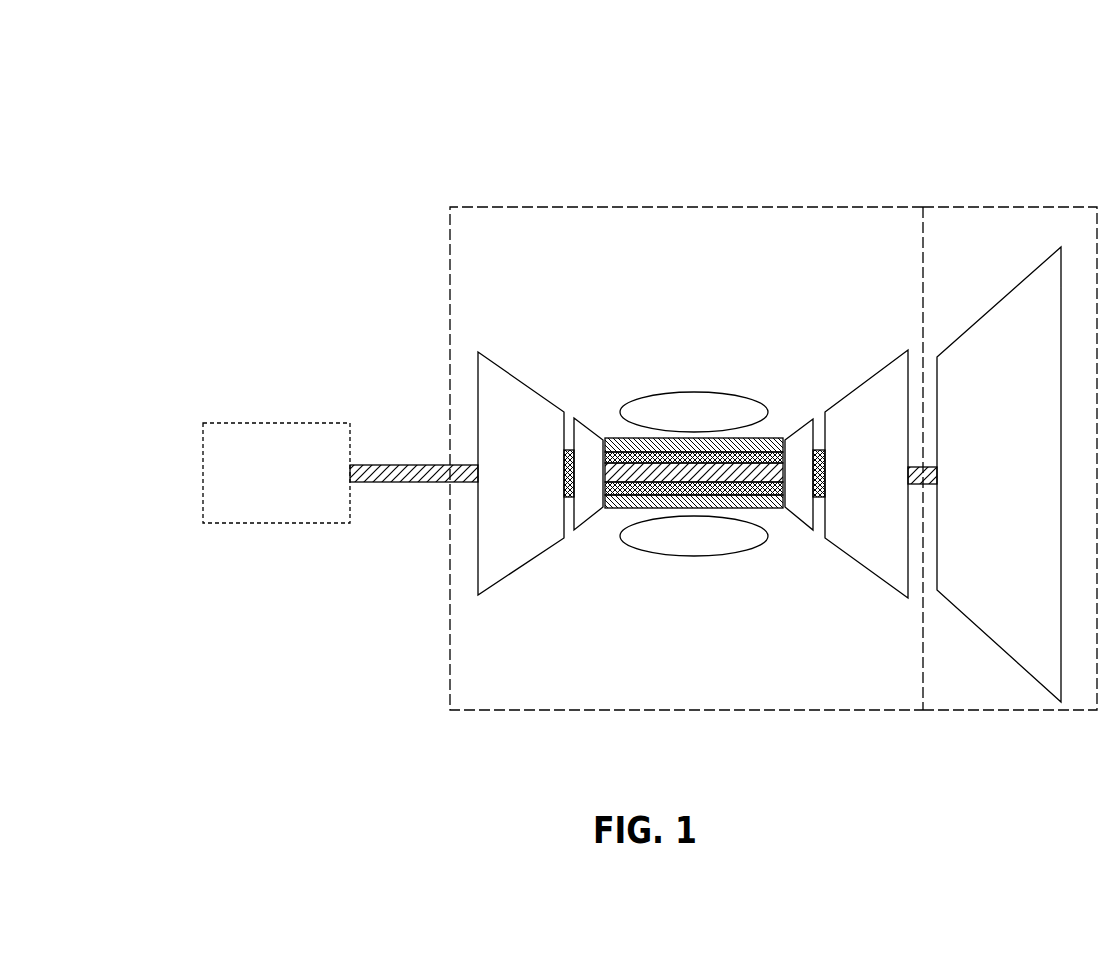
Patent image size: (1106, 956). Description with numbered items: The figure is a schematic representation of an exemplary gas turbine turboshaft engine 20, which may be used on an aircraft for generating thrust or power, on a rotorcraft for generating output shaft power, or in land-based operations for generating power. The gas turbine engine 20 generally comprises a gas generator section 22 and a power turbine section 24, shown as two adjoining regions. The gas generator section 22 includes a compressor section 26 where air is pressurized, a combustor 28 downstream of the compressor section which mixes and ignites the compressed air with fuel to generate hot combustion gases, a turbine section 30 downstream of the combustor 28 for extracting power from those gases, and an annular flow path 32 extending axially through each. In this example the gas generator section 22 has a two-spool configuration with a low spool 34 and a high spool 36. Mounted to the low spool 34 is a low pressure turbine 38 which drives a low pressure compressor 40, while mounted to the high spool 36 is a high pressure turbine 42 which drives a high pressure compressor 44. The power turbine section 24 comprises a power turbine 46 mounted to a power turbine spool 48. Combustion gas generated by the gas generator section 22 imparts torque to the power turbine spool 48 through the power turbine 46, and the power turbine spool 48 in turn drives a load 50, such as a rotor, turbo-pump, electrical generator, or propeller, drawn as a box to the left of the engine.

The gas turbine turboshaft engine 20 is at (958, 75).
The gas generator section 22 is at (697, 207).
The power turbine section 24 is at (1003, 207).
The compressor section 26 is at (565, 553).
The combustor 28 is at (689, 570).
The turbine section 30 is at (815, 555).
The annular flow path 32 is at (710, 376).
The low spool 34 is at (567, 448).
The high spool 36 is at (778, 440).
The low pressure turbine 38 is at (867, 380).
The low pressure compressor 40 is at (518, 380).
The high pressure turbine 42 is at (800, 428).
The high pressure compressor 44 is at (597, 437).
The power turbine 46 is at (996, 303).
The power turbine spool 48 is at (928, 464).
The load 50 is at (270, 423).